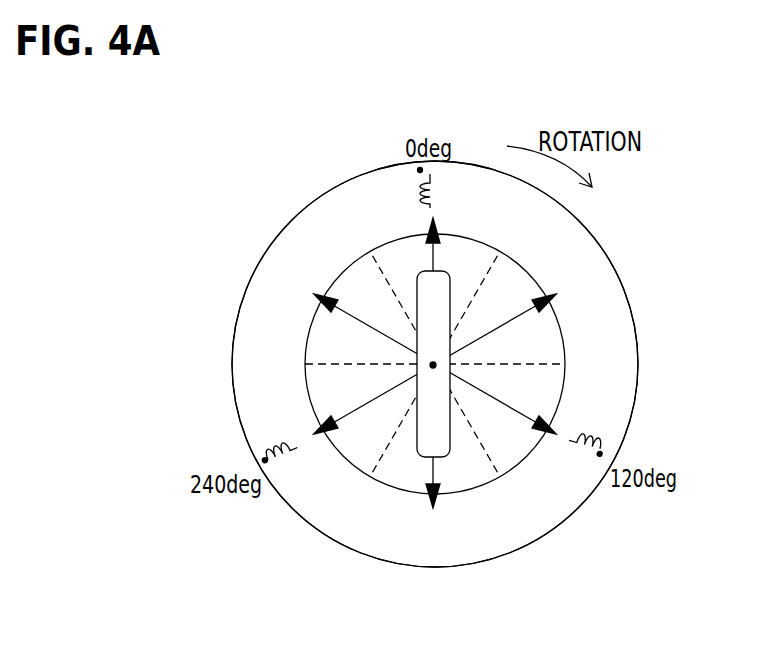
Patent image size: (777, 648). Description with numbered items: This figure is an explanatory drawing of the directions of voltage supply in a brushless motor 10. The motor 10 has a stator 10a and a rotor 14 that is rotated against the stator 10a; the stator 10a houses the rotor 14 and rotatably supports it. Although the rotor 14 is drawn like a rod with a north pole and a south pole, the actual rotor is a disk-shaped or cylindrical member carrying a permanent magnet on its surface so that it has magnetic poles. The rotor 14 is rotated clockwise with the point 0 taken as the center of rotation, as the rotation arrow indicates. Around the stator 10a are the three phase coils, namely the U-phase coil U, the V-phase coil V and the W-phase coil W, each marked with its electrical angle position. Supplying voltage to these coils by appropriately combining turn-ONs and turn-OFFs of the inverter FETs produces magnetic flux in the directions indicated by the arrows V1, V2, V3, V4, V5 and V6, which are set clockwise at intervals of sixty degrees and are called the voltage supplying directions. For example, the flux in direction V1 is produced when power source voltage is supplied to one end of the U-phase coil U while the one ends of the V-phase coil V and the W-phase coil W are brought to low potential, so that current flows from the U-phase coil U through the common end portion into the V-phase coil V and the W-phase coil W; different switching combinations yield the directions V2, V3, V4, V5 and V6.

The motor 10 is at (652, 206).
The stator 10a is at (613, 263).
The rotor 14 is at (416, 287).
The point O 0 is at (450, 333).
The U-phase coil U is at (414, 185).
The V-phase coil V is at (598, 463).
The W-phase coil W is at (270, 462).
The voltage supplying direction V1 is at (437, 255).
The voltage supplying direction V2 is at (520, 312).
The voltage supplying direction V3 is at (512, 408).
The voltage supplying direction V4 is at (434, 470).
The voltage supplying direction V5 is at (352, 411).
The voltage supplying direction V6 is at (345, 313).